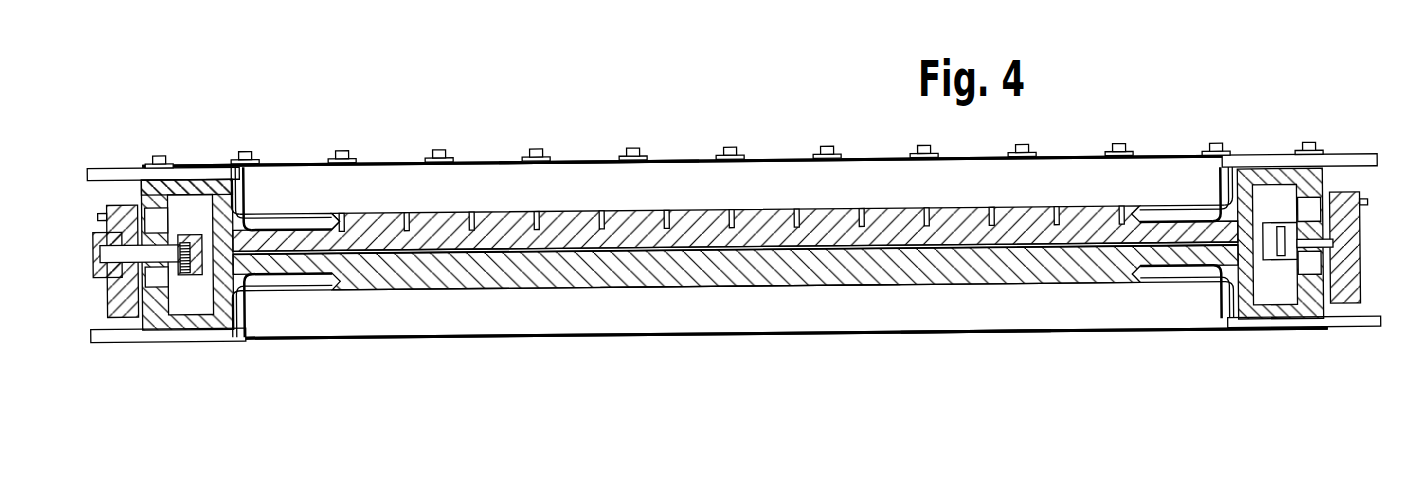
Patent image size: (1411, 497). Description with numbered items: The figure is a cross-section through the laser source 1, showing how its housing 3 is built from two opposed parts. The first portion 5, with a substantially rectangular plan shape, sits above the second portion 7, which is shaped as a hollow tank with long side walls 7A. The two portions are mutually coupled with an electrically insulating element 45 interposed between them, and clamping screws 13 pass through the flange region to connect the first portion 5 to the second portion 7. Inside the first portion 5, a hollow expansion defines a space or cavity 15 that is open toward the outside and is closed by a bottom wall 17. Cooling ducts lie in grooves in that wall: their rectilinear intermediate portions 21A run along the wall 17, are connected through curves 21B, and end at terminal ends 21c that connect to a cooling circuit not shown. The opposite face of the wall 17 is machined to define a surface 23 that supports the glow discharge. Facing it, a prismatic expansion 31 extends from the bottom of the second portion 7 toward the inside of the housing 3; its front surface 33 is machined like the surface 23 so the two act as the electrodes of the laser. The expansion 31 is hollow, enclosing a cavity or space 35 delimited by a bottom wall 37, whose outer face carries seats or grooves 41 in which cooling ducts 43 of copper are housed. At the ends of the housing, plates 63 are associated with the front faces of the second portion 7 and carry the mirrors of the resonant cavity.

The laser source 1 is at (710, 114).
The housing 3 is at (596, 108).
The first portion 5 is at (402, 154).
The second portion 7 is at (407, 364).
The long side walls 7A is at (973, 337).
The clamping screws 13 is at (442, 154).
The space or cavity 15 is at (758, 190).
The bottom wall 17 is at (725, 222).
The rectilinear intermediate portion 21A is at (1177, 216).
The curves 21B is at (1220, 166).
The terminal ends 21c is at (114, 170).
The surface 23 is at (886, 247).
The expansion 31 is at (203, 310).
The front surface 33 is at (859, 259).
The cavity or space 35 is at (747, 308).
The bottom wall 37 is at (602, 276).
The seats or grooves 41 is at (296, 287).
The cooling ducts 43 is at (129, 338).
The electrically insulating element 45 is at (172, 188).
The plates 63 is at (107, 300).